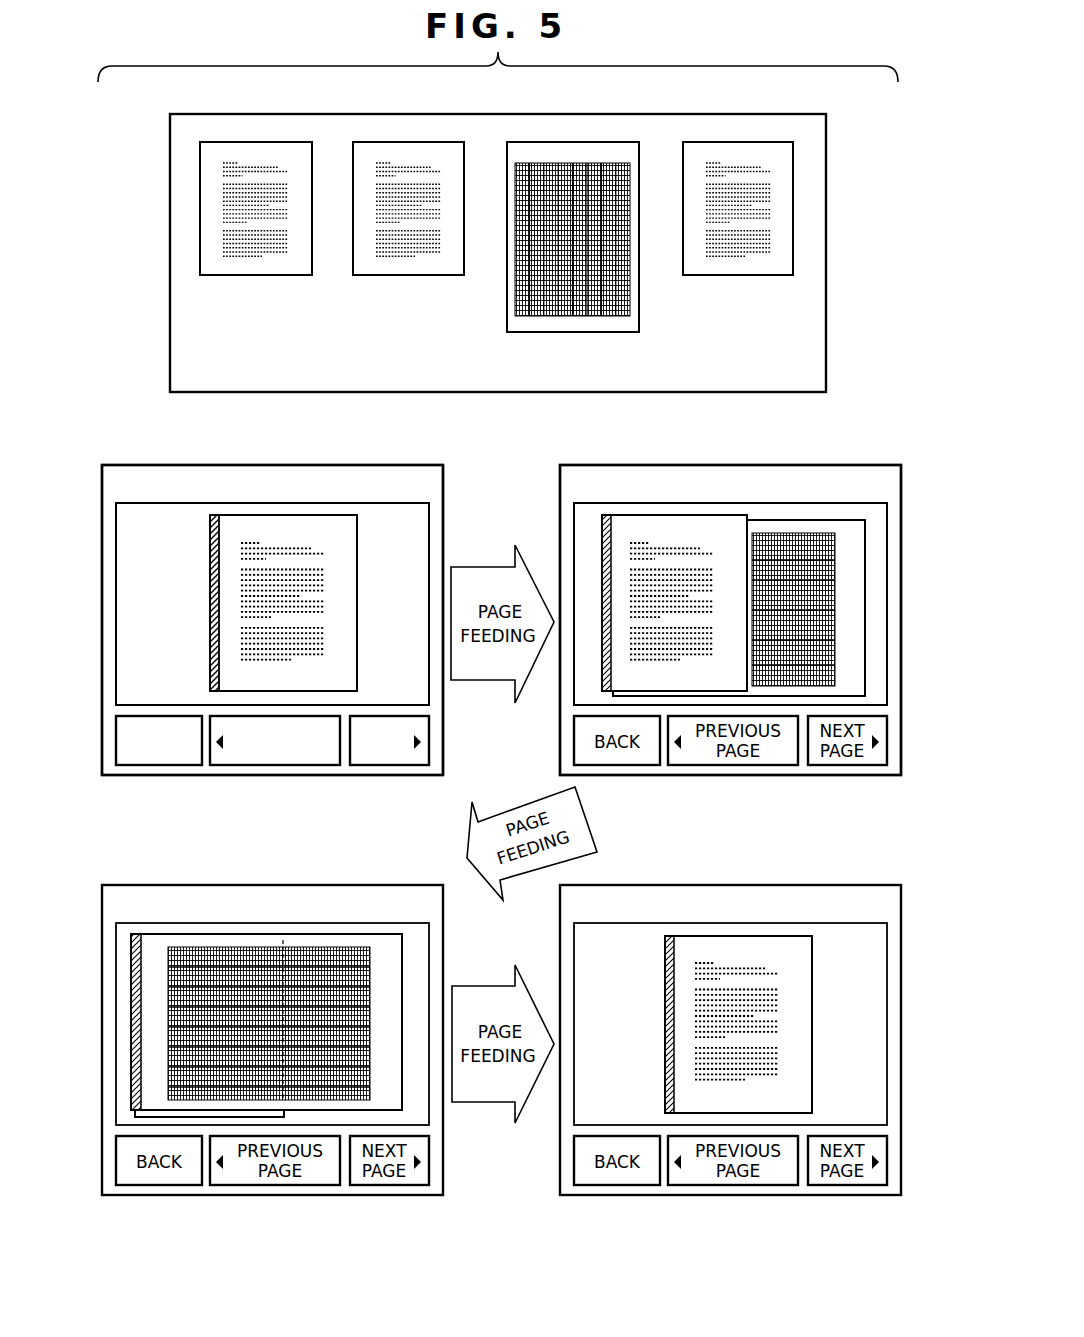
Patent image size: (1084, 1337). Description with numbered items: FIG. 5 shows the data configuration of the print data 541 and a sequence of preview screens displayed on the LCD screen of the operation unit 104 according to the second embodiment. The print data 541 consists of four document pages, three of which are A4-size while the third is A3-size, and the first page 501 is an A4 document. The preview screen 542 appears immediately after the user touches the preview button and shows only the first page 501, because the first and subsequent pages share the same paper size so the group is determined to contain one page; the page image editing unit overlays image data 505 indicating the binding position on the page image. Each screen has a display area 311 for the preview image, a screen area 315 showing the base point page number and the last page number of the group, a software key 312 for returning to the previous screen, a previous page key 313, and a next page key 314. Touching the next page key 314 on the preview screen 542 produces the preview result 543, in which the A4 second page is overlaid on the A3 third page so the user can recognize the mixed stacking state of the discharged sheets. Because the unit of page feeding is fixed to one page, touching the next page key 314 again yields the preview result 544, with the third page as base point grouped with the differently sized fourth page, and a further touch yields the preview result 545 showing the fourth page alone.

The page contents of print documents 541 is at (751, 109).
The first page 501 is at (286, 276).
The preview screen 542 is at (107, 464).
The preview result 543 is at (565, 464).
The preview result 544 is at (107, 884).
The preview result 545 is at (823, 884).
The screen area 315 is at (240, 466).
The image data indicating a binding position 505 is at (210, 575).
The operation unit 104 is at (558, 487).
The display area 311 is at (418, 541).
The software key 312 is at (157, 767).
The previous page key 313 is at (268, 767).
The next page key 314 is at (378, 767).